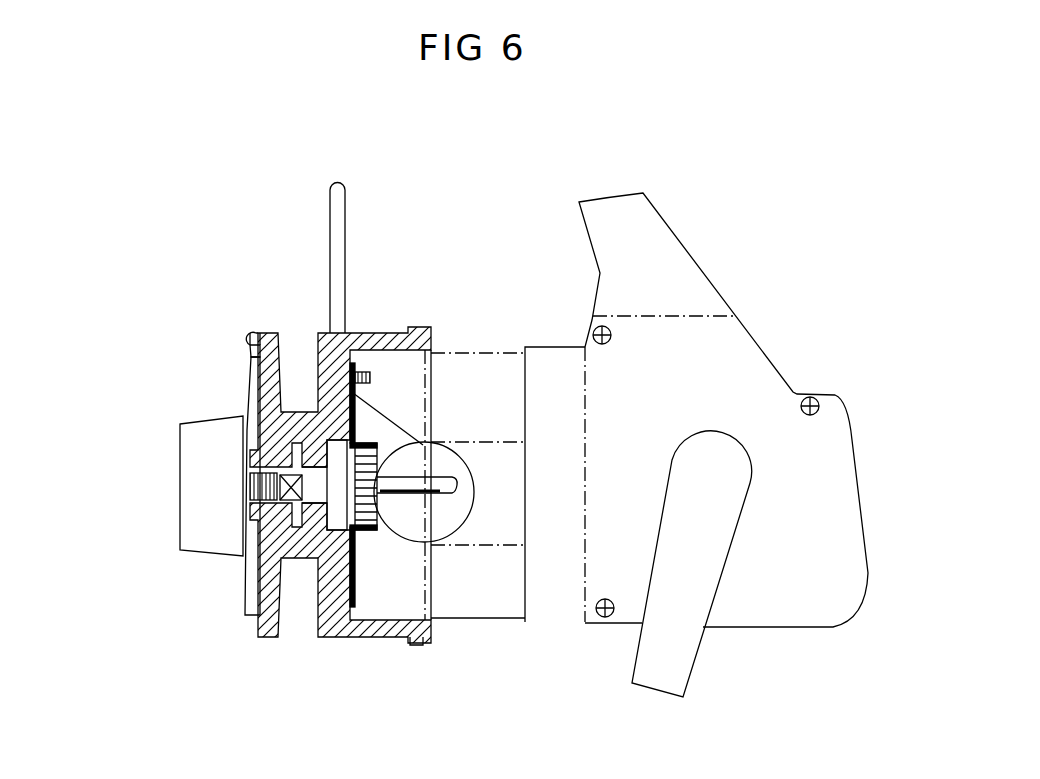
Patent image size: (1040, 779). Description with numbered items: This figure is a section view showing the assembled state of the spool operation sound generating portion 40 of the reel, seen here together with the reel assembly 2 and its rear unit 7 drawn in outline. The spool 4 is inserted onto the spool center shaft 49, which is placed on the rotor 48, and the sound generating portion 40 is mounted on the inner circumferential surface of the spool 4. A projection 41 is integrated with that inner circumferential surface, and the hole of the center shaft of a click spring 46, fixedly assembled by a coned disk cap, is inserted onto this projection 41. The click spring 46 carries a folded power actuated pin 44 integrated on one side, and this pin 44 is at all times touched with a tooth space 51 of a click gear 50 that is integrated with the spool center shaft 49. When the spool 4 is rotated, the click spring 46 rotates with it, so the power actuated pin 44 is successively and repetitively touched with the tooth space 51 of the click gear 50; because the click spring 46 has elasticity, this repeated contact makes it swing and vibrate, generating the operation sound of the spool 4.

The drive unit 2 is at (224, 392).
The spool 4 is at (337, 639).
The electric motor 7 is at (215, 558).
The spool operation sound generating portion 40 is at (300, 316).
The projection 41 is at (372, 372).
The folded power actuated pin 44 is at (375, 442).
The click spring 46 is at (360, 419).
The rotor 48 is at (473, 612).
The spool center shaft 49 is at (441, 480).
The click gear 50 is at (365, 541).
The tooth space of the click gear 51 is at (378, 495).